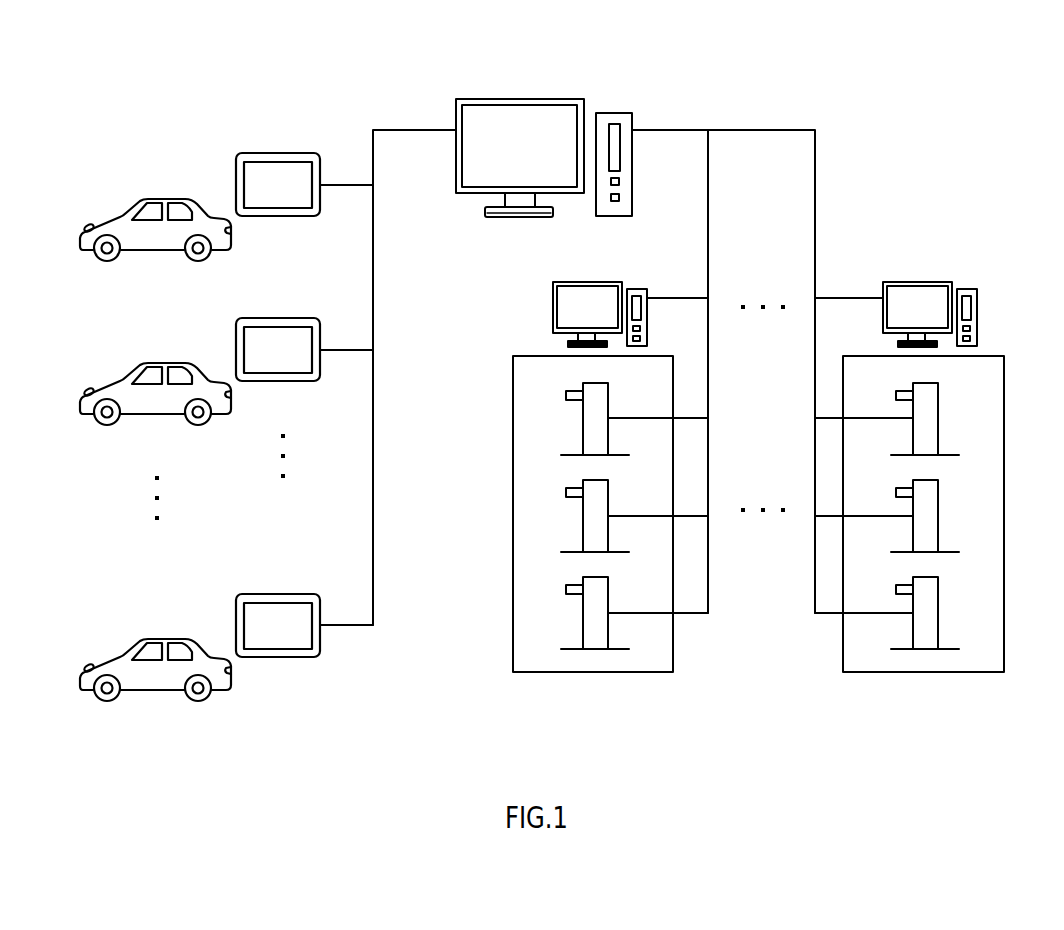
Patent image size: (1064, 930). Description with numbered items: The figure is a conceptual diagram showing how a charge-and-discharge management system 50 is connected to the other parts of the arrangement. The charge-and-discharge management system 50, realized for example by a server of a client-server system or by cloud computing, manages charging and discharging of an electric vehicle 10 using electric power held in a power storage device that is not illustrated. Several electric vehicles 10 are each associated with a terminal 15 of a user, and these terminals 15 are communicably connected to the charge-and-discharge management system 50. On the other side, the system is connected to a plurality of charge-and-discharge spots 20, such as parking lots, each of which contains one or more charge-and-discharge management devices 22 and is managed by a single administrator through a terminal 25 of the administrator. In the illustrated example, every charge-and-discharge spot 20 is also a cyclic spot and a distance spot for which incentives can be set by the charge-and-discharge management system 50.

The electric vehicle 10 is at (162, 197).
The terminal of a user 15 is at (275, 152).
The charge-and-discharge spot 20 is at (593, 673).
The charge-and-discharge management device 22 is at (583, 425).
The terminal of an administrator 25 is at (550, 298).
The charge-and-discharge management system 50 is at (541, 97).